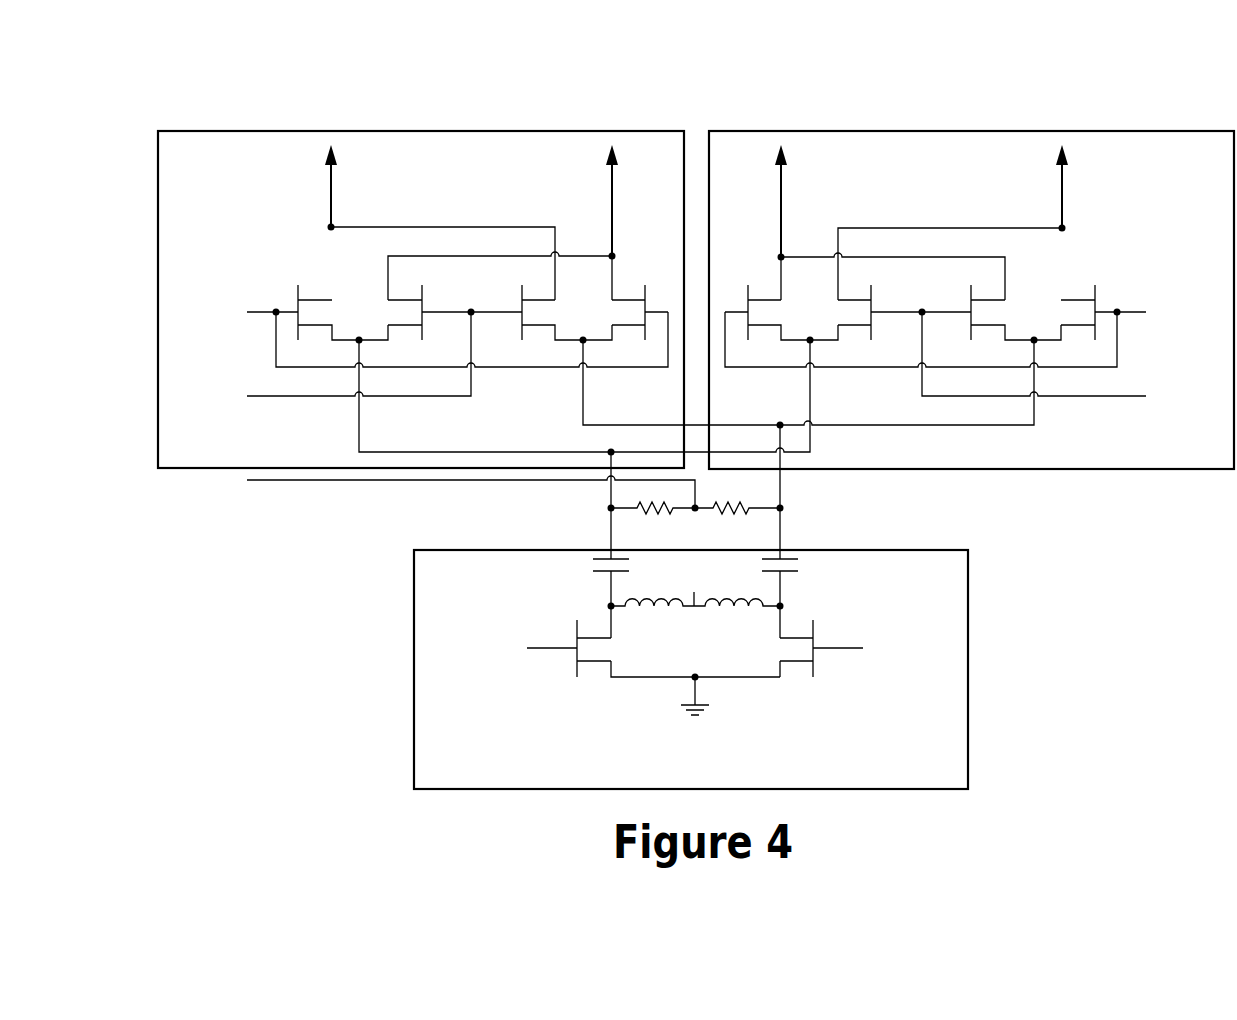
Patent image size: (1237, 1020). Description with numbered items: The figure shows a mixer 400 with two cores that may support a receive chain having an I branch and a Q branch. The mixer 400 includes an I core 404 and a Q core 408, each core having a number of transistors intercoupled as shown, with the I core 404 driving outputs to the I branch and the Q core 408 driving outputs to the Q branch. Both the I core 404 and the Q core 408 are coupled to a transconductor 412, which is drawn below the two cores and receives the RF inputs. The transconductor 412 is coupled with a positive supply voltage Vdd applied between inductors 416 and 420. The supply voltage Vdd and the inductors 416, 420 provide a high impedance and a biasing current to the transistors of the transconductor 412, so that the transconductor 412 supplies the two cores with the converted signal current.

The mixer 400 is at (272, 78).
The I core 404 is at (550, 131).
The Q core 408 is at (1117, 133).
The transconductor 412 is at (967, 622).
The inductor 416 is at (577, 582).
The inductor 420 is at (802, 581).